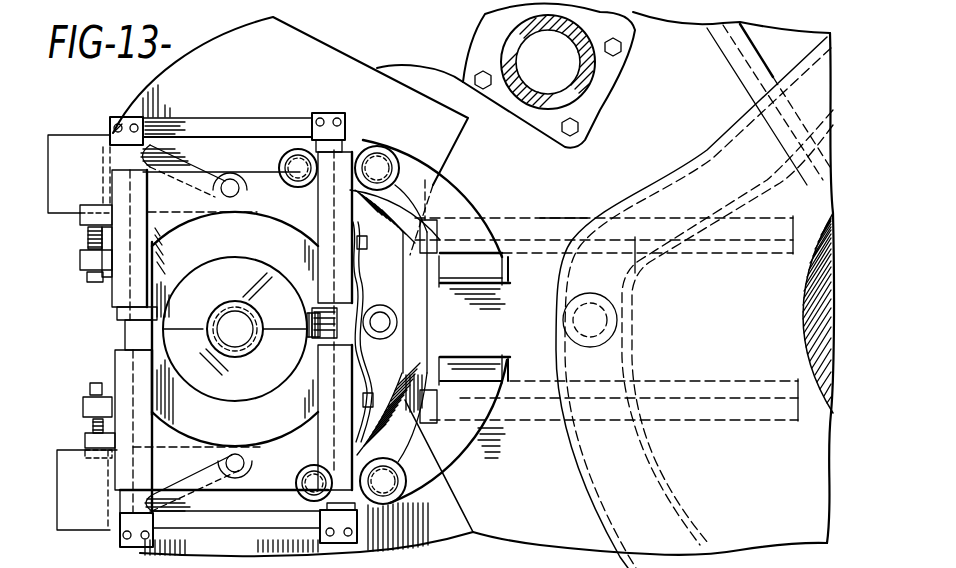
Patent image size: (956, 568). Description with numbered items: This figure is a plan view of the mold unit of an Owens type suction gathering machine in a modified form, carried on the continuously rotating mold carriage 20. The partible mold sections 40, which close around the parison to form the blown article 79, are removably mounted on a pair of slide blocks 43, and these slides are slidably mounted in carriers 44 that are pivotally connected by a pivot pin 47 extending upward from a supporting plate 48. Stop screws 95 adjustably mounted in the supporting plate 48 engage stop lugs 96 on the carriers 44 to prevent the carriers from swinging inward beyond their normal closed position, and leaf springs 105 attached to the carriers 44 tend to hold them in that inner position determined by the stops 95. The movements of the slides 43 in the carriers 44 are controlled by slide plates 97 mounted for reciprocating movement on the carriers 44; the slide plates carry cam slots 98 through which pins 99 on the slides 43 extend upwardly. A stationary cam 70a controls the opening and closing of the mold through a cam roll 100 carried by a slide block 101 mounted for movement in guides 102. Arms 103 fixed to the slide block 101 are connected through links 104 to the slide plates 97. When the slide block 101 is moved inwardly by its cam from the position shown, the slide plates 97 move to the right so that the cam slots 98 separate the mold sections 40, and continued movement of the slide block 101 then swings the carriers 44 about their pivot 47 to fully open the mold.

The mold carriage 20 is at (643, 28).
The partible mold sections 40 is at (238, 291).
The slide blocks 43 is at (167, 287).
The carriers 44 is at (262, 177).
The pivot pin 47 is at (390, 322).
The supporting plate 48 is at (310, 40).
The stationary cam 70a is at (592, 482).
The blown article 79 is at (253, 337).
The stop screws 95 is at (88, 242).
The stop lugs 96 is at (88, 221).
The slide plates 97 is at (230, 137).
The cam slots 98 is at (185, 153).
The pins 99 is at (240, 190).
The cam roll 100 is at (612, 321).
The slide block 101 is at (540, 342).
The guides 102 is at (530, 223).
The arms 103 is at (462, 186).
The links 104 is at (360, 143).
The leaf springs 105 is at (373, 365).